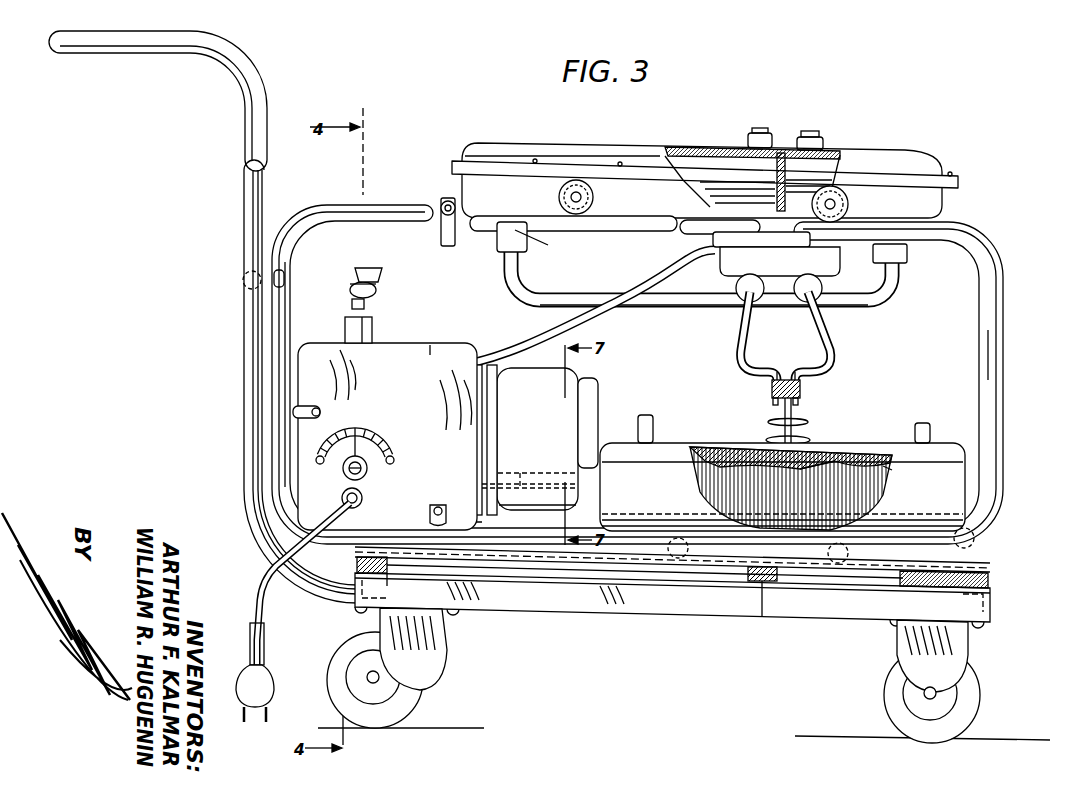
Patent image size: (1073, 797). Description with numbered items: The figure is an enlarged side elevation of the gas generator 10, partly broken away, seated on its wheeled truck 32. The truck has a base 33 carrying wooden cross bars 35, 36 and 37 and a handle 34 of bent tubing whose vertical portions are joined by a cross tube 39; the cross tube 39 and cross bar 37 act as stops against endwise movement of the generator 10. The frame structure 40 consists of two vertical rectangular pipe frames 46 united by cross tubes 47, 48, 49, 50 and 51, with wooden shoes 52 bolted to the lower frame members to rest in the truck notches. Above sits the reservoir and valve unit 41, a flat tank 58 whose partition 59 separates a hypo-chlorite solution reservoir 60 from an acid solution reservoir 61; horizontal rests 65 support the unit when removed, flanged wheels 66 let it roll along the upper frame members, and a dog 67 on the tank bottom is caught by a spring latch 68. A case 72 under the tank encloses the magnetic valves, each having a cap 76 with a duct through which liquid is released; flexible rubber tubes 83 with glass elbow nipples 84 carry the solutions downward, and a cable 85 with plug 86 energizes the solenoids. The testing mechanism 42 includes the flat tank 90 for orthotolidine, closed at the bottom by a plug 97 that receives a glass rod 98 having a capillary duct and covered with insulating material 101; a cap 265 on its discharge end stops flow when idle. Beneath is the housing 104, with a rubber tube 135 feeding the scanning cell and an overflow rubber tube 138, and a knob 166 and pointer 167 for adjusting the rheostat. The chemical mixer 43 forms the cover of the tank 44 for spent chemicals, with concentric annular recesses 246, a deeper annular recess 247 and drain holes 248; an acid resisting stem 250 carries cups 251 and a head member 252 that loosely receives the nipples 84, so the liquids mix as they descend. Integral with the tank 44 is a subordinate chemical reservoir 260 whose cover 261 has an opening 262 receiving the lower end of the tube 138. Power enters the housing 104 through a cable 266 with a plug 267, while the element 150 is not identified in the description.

The gas generator 10 is at (440, 126).
The wheeled truck 32 is at (669, 640).
The base 33 is at (650, 603).
The handle 34 is at (247, 198).
The wooden cross bar 35 is at (356, 563).
The wooden cross bar 36 is at (765, 605).
The wooden cross bar 37 is at (980, 582).
The cross tube 39 is at (242, 282).
The frame structure 40 is at (1012, 296).
The reservoir and valve unit 41 is at (898, 146).
The testing mechanism 42 is at (336, 384).
The chemical mixer 43 is at (810, 453).
The tank 44 is at (975, 492).
The rectangular pipe frames 46 is at (1003, 352).
The cross tube 47 is at (273, 270).
The cross tube 48 is at (446, 200).
The cross tube 49 is at (676, 562).
The cross tube 50 is at (838, 567).
The cross tube 51 is at (977, 538).
The wooden shoes 52 is at (522, 600).
The flat tank 58 is at (705, 159).
The partition 59 is at (783, 150).
The hypo-chlorite solution reservoir 60 is at (722, 162).
The acid solution reservoir 61 is at (826, 166).
The horizontal rests 65 is at (662, 309).
The flanged wheels 66 is at (558, 196).
The dog 67 is at (540, 246).
The spring latch 68 is at (490, 231).
The case 72 is at (728, 264).
The cap 76 is at (804, 285).
The flexible rubber tube 83 is at (833, 337).
The glass elbow nipple 84 is at (796, 374).
The cable 85 is at (621, 290).
The plug 86 is at (448, 353).
The flat tank 90 is at (403, 253).
The plug 97 is at (369, 270).
The glass rod 98 is at (377, 288).
The insulating material 101 is at (350, 288).
The housing 104 is at (394, 345).
The rubber tube 135 is at (372, 330).
The rubber tube 138 is at (490, 470).
The motor 150 is at (533, 436).
The knob 166 is at (364, 474).
The pointer 167 is at (380, 444).
The annular concentric recesses 246 is at (828, 452).
The annular recess 247 is at (853, 458).
The drain holes 248 is at (872, 468).
The acid resisting stem 250 is at (784, 408).
The cups 251 is at (766, 437).
The head member 252 is at (771, 390).
The subordinate chemical reservoir 260 is at (600, 507).
The cover 261 is at (600, 478).
The opening 262 is at (531, 478).
The cap 265 is at (350, 305).
The cable 266 is at (256, 588).
The plug 267 is at (273, 690).